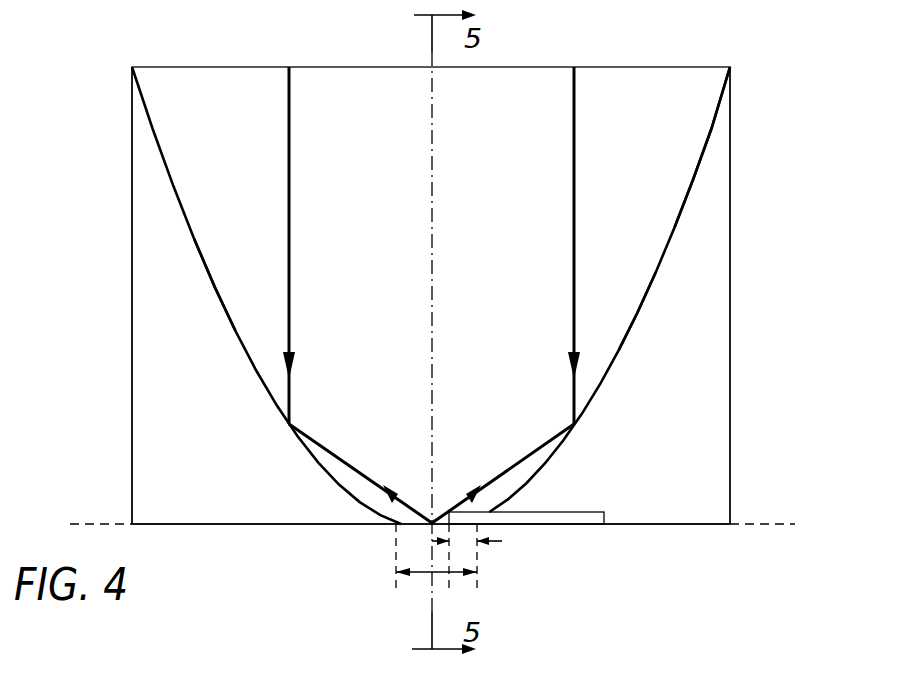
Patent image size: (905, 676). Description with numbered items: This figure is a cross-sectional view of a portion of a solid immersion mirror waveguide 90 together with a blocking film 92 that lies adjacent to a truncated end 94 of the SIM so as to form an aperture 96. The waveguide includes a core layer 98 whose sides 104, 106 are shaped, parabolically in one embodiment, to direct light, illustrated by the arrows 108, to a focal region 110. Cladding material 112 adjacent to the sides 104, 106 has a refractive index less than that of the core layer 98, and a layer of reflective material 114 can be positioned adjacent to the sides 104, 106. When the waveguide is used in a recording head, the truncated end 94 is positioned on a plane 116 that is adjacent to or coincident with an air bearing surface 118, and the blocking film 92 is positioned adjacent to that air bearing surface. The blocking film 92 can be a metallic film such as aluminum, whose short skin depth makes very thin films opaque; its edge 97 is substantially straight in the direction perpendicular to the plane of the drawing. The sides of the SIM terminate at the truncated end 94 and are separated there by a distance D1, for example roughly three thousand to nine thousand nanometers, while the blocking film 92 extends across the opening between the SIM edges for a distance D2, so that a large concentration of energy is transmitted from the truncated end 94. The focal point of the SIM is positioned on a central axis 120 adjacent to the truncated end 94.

The solid immersion mirror waveguide 90 is at (632, 88).
The blocking film 92 is at (582, 521).
The truncated end 94 is at (406, 528).
The aperture 96 is at (420, 527).
The edge of the blocking film 97 is at (435, 518).
The core layer 98 is at (678, 155).
The side of the core layer 104 is at (247, 357).
The side of the core layer 106 is at (610, 372).
The arrows 108 is at (291, 233).
The focal region 110 is at (430, 520).
The cladding material 112 is at (153, 464).
The layer of reflective material 114 is at (212, 292).
The plane 116 is at (762, 527).
The air bearing surface 118 is at (232, 526).
The central axis 120 is at (434, 292).
The distance D1 is at (447, 575).
The distance D2 is at (467, 543).